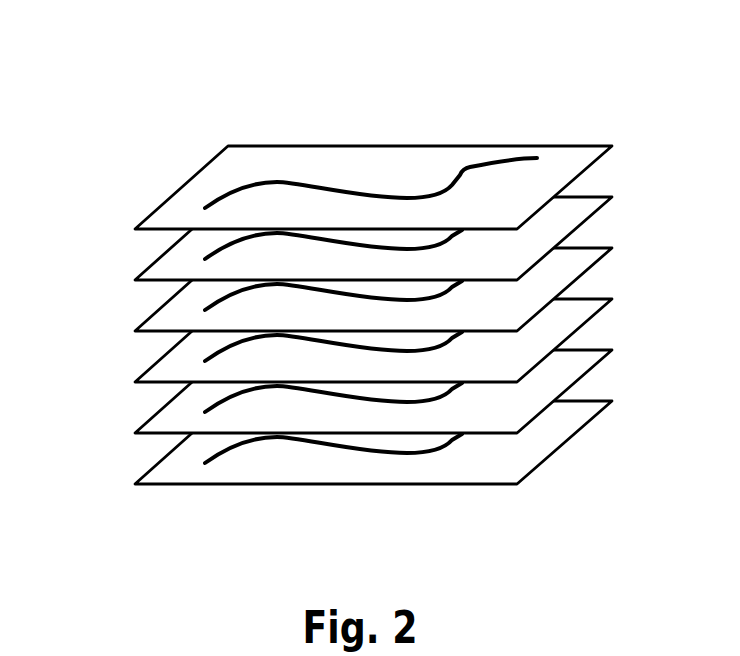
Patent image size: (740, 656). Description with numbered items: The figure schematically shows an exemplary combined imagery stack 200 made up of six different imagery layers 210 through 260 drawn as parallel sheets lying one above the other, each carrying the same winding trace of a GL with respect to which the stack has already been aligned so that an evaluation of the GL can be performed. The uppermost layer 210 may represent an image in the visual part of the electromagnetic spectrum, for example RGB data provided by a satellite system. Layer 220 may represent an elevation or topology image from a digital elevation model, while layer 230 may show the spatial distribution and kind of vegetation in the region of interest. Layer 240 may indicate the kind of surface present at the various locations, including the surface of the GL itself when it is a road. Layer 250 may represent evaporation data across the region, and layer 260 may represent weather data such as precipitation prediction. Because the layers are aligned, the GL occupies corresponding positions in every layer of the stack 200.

The combined imagery stack 200 is at (360, 256).
The imagery layer 210 is at (158, 207).
The imagery layer 220 is at (158, 258).
The imagery layer 230 is at (158, 309).
The imagery layer 240 is at (158, 360).
The imagery layer 250 is at (158, 411).
The imagery layer 260 is at (158, 462).
The element GL is at (313, 185).